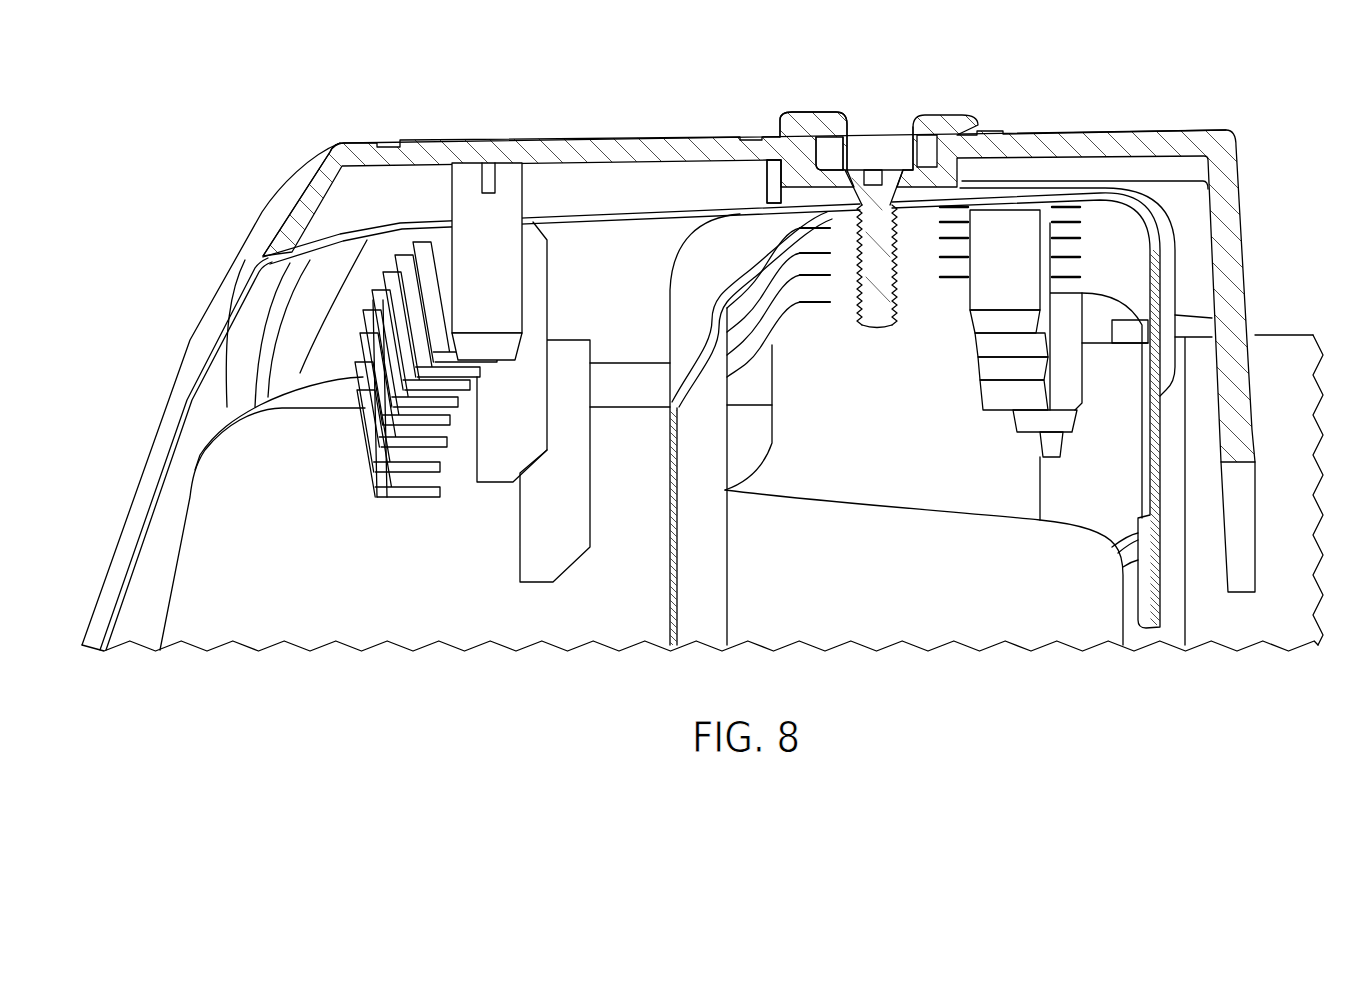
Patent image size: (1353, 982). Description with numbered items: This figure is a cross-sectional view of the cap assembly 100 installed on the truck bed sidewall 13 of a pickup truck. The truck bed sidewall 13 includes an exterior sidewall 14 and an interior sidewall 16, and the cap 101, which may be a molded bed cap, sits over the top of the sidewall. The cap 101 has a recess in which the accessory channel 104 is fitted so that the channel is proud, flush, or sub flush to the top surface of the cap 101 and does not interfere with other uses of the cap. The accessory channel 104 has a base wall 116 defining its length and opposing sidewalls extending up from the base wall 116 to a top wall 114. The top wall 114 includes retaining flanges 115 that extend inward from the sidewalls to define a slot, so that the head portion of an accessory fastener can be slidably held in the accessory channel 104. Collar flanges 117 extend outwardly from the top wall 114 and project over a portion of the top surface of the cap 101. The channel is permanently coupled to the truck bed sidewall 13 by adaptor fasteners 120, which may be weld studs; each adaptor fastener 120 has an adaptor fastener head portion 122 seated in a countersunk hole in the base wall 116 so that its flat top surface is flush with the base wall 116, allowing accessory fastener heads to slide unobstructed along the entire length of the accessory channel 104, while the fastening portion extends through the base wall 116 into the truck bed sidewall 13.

The cap assembly 100 is at (719, 147).
The truck bed sidewall 13 is at (150, 270).
The exterior sidewall 14 is at (178, 389).
The interior sidewall 16 is at (717, 577).
The cap 101 is at (546, 142).
The accessory channel 104 is at (889, 103).
The top wall 114 is at (810, 112).
The retaining flanges 115 is at (838, 118).
The base wall 116 is at (831, 196).
The collar flanges 117 is at (781, 132).
The adaptor fasteners 120 is at (893, 244).
The adaptor fastener head portion 122 is at (896, 171).